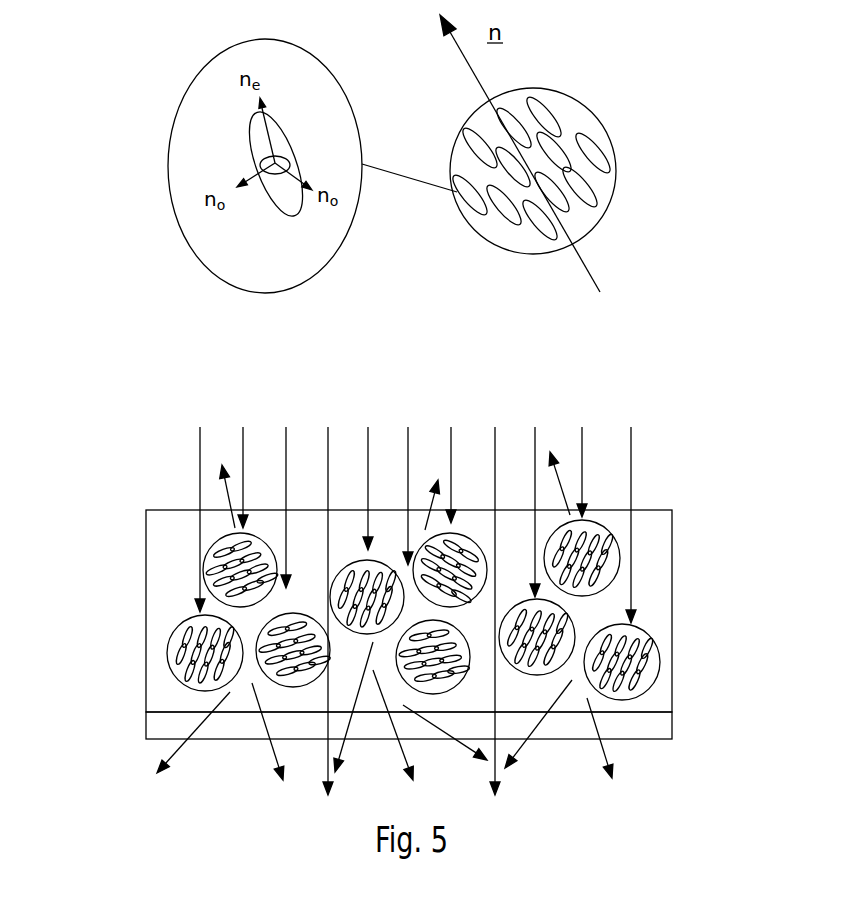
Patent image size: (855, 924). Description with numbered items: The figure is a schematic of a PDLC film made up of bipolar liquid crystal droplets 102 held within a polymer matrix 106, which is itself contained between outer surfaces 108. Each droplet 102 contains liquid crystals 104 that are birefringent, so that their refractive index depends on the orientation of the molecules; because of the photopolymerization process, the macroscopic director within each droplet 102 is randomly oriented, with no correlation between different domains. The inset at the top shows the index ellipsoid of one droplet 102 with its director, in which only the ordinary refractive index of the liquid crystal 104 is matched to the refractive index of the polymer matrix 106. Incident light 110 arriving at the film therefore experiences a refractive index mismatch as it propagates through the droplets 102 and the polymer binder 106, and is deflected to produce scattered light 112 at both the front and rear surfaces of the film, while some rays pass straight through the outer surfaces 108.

The droplets 102 is at (617, 162).
The liquid crystals 104 is at (553, 110).
The polymer matrix 106 is at (672, 672).
The outer surfaces 108 is at (667, 725).
The incident light 110 is at (200, 455).
The scattered light 112 is at (153, 768).